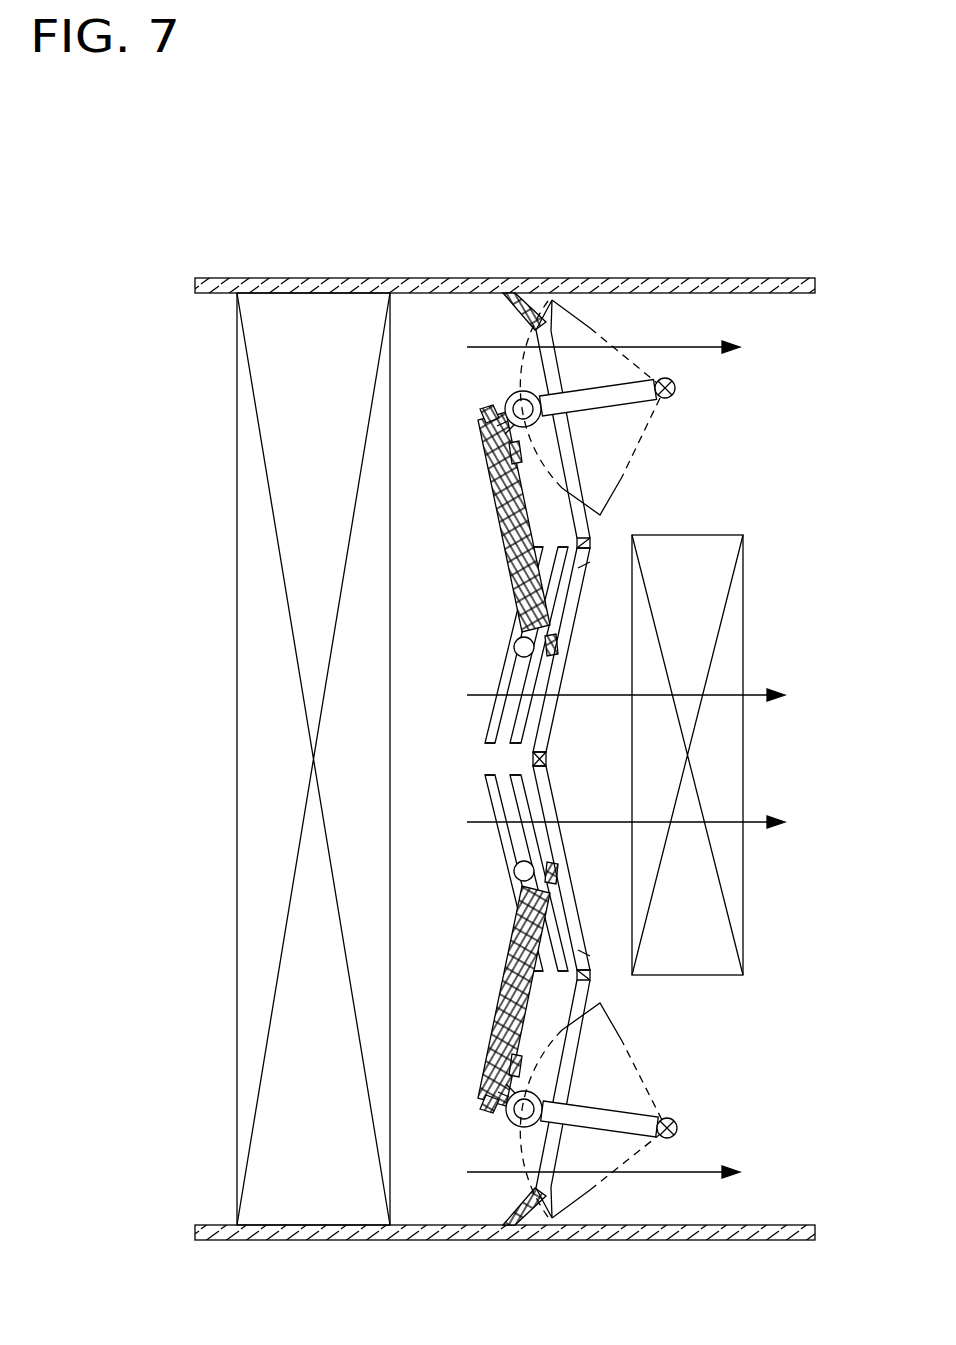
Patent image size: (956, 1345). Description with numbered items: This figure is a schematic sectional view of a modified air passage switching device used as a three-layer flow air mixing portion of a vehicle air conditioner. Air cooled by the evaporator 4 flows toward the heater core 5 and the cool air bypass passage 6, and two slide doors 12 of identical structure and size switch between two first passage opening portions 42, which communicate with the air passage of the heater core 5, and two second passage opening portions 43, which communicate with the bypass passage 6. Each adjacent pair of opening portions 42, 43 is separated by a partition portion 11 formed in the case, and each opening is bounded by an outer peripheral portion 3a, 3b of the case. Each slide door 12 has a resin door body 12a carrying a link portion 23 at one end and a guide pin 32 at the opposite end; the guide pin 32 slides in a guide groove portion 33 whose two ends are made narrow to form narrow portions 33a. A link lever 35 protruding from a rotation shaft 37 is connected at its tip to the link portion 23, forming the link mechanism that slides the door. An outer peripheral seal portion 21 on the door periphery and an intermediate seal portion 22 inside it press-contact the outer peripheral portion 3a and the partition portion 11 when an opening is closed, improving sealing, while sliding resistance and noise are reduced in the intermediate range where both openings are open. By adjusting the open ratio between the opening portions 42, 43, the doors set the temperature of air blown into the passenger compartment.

The outer peripheral portion 3a is at (548, 755).
The outer peripheral portion 3b is at (525, 290).
The evaporator 4 is at (325, 1203).
The heater core 5 is at (700, 970).
The cool air bypass passage 6 is at (700, 466).
The partition portion 11 is at (590, 546).
The slide door 12 is at (474, 759).
The door body 12a is at (503, 495).
The outer peripheral seal portion 21 is at (484, 412).
The intermediate seal portion 22 is at (507, 451).
The link portion 23 is at (511, 396).
The guide pin 32 is at (514, 645).
The guide groove portion 33 is at (516, 673).
The narrow portion 33a is at (537, 556).
The link lever 35 is at (601, 403).
The rotation shaft 37 is at (676, 388).
The first passage opening portion 42 is at (554, 712).
The second passage opening portion 43 is at (560, 362).